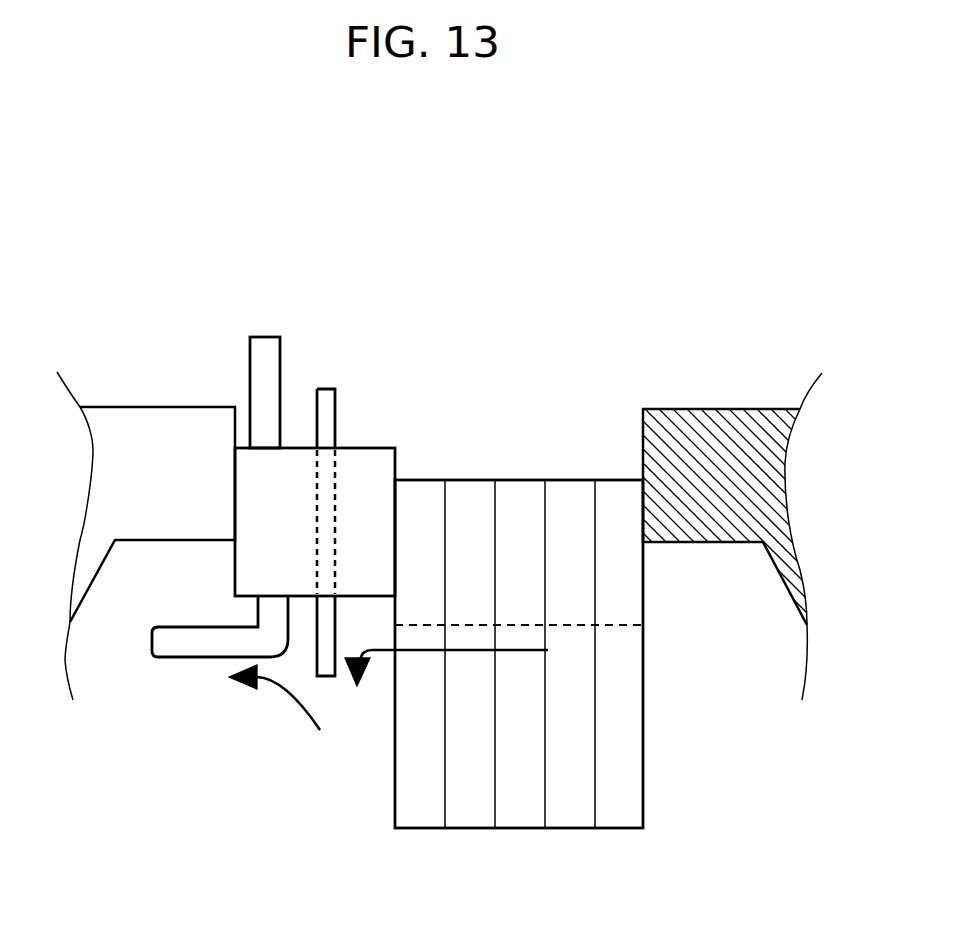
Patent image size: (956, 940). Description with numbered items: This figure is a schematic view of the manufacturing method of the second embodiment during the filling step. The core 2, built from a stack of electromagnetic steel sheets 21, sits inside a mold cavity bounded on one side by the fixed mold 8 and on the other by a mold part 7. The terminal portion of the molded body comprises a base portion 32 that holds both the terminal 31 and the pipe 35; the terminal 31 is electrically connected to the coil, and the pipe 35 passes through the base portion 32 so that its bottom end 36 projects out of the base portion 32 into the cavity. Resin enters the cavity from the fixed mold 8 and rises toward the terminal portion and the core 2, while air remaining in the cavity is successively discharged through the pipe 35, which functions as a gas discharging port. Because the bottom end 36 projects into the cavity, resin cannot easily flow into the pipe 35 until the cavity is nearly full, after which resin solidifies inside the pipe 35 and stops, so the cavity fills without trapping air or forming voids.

The core 2 is at (355, 278).
The housing wall (left) 7 is at (131, 422).
The fixed mold 8 is at (706, 416).
The electromagnetic steel sheet 21 is at (412, 492).
The terminal 31 is at (265, 347).
The base portion 32 is at (254, 476).
The pipe 35 is at (326, 389).
The bottom end 36 is at (326, 679).